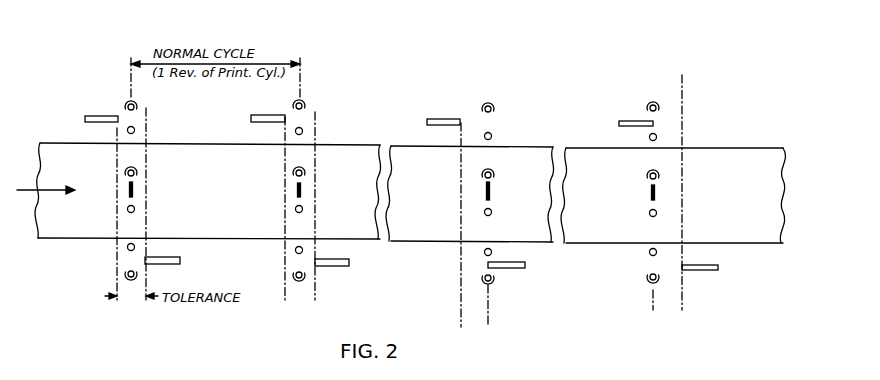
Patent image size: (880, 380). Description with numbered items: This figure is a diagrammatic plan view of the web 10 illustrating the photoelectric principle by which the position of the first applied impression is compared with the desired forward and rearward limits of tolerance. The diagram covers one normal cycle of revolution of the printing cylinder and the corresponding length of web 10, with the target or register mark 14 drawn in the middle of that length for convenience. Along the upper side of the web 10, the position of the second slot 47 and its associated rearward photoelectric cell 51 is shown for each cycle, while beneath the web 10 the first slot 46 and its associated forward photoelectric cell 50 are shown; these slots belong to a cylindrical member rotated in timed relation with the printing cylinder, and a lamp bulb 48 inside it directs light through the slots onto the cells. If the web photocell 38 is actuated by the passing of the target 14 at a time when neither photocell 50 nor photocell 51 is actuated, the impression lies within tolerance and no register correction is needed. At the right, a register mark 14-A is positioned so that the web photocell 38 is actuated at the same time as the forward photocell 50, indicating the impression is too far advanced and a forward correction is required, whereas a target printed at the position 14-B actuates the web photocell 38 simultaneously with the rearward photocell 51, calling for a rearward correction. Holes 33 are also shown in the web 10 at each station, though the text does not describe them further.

The web 10 is at (228, 198).
The target or register mark 14 is at (134, 189).
The register mark 14-A is at (490, 190).
The register mark 14-B is at (650, 191).
The sensing hole 33 is at (135, 208).
The web photocell 38 is at (136, 172).
The first slot 46 is at (172, 257).
The second slot 47 is at (97, 116).
The lamp bulb 48 is at (135, 129).
The forward photoelectric cell 50 is at (137, 276).
The rearward photoelectric cell 51 is at (135, 104).